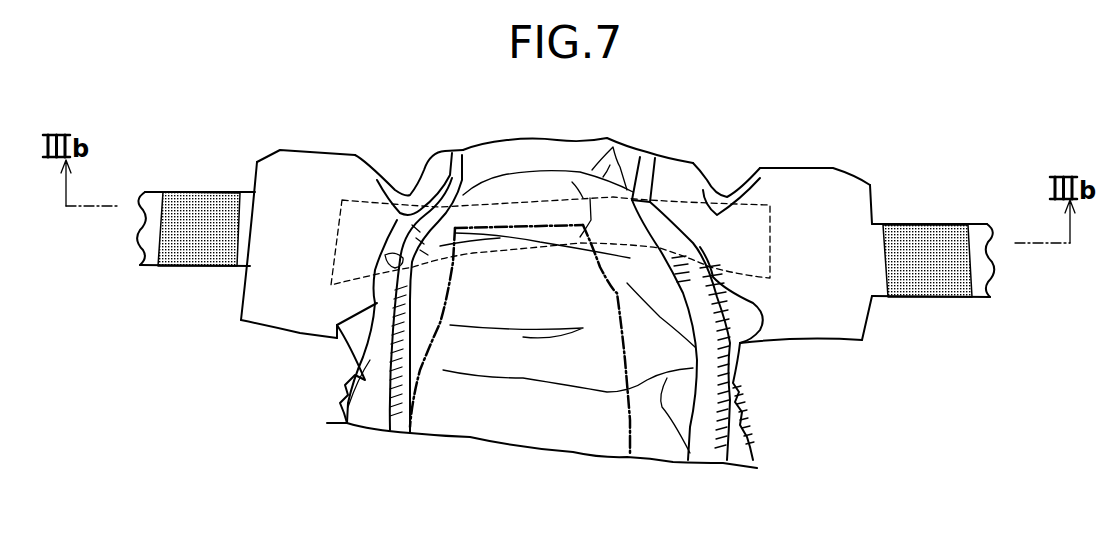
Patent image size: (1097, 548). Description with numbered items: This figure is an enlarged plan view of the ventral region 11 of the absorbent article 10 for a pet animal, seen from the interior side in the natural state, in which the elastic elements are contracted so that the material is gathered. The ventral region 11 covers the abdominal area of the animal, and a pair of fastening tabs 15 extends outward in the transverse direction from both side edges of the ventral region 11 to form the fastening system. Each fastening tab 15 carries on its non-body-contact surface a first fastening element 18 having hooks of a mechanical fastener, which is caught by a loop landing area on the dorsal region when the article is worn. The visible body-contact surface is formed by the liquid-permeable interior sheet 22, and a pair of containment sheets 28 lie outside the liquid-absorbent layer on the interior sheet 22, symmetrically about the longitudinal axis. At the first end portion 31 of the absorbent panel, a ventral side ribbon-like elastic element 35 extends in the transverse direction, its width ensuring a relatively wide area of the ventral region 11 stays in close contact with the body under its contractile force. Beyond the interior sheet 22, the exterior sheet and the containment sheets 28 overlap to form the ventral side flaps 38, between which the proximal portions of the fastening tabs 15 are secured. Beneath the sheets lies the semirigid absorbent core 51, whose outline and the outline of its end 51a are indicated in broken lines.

The absorbent article 10 is at (875, 96).
The ventral region 11 is at (795, 320).
The fastening tab 15 is at (138, 245).
The first fastening element 18 is at (198, 218).
The interior sheet 22 is at (515, 422).
The containment sheet 28 is at (370, 410).
The first end portion 31 is at (478, 165).
The ventral side ribbon-like elastic element 35 is at (745, 223).
The ventral side flap 38 is at (307, 177).
The absorbent core 51 is at (558, 213).
The end of elastic member 51a is at (528, 227).